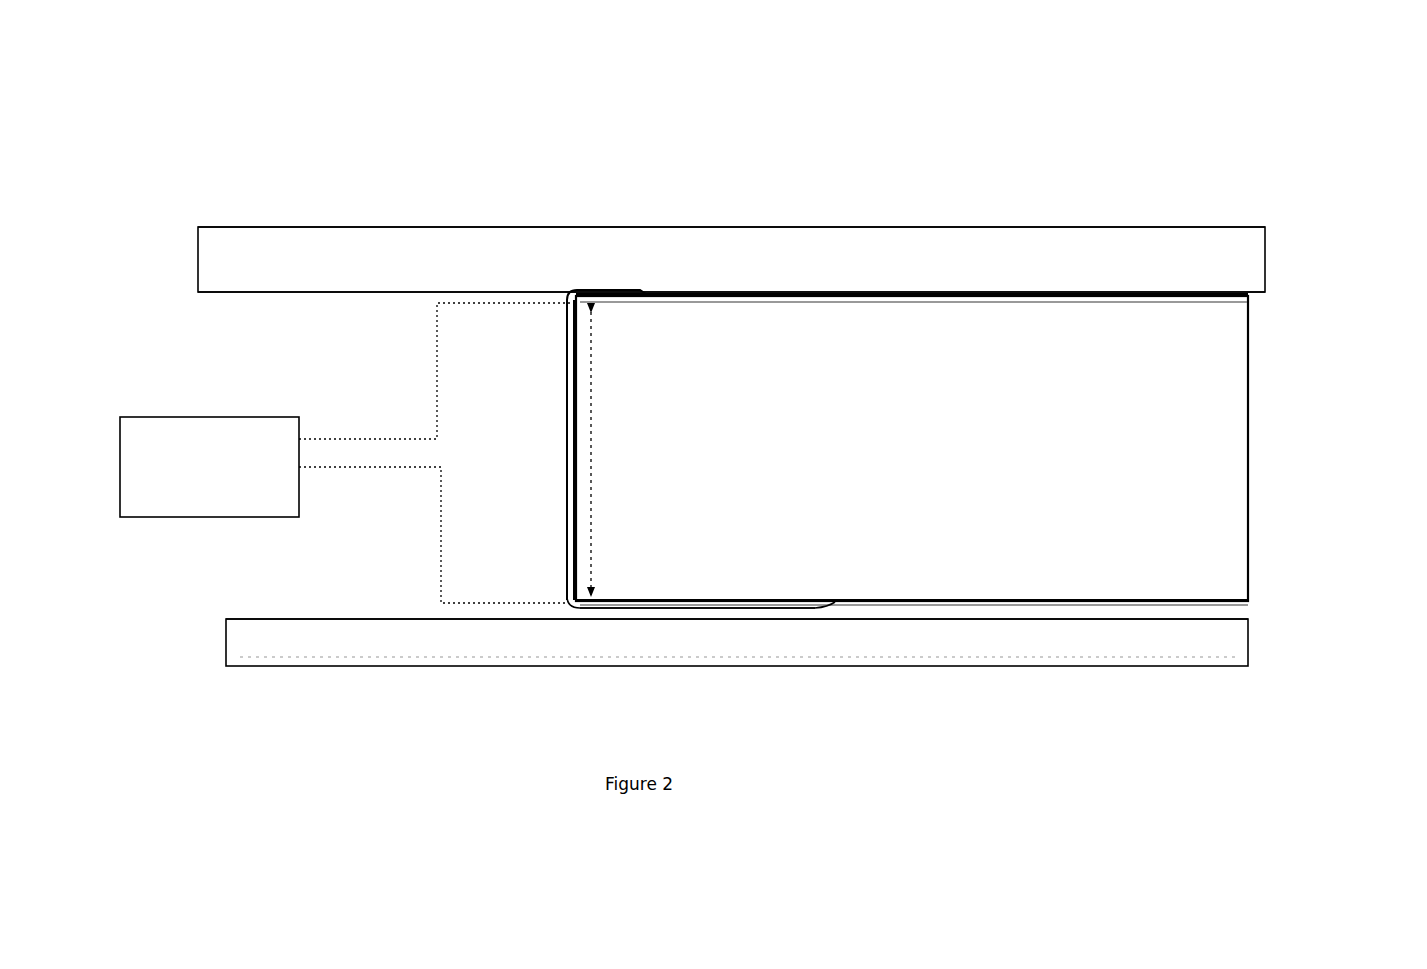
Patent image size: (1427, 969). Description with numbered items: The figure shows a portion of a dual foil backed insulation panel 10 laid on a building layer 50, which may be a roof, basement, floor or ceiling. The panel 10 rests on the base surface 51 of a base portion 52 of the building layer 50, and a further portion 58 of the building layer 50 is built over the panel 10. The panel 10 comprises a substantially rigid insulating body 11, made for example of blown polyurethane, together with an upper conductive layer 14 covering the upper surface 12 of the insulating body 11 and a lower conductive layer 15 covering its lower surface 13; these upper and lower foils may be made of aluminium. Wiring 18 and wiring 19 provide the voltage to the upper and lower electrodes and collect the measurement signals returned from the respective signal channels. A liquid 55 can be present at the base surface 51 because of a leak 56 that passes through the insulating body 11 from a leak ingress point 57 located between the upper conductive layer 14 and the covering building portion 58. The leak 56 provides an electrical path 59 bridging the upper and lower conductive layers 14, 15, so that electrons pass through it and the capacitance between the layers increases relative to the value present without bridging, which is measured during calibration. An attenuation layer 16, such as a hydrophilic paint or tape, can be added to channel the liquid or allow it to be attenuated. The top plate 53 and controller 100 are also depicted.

The dual foil backed insulation panel 10 is at (1272, 572).
The insulating body 11 is at (1193, 470).
The upper surface 12 is at (943, 341).
The lower surface 13 is at (953, 561).
The upper conductive layer 14 is at (880, 291).
The lower conductive layer 15 is at (940, 632).
The attenuation layer 16 is at (582, 559).
The wiring 18 is at (437, 371).
The wiring 19 is at (433, 535).
The building layer 50 is at (1305, 212).
The base surface 51 is at (1018, 620).
The base portion 52 is at (737, 662).
The upper platen 53 is at (752, 226).
The liquid 55 is at (697, 648).
The leak 56 is at (527, 341).
The leak ingress point 57 is at (623, 288).
The further portion of the building layer 58 is at (333, 272).
The electrical path 59 is at (597, 434).
The controller 100 is at (209, 467).